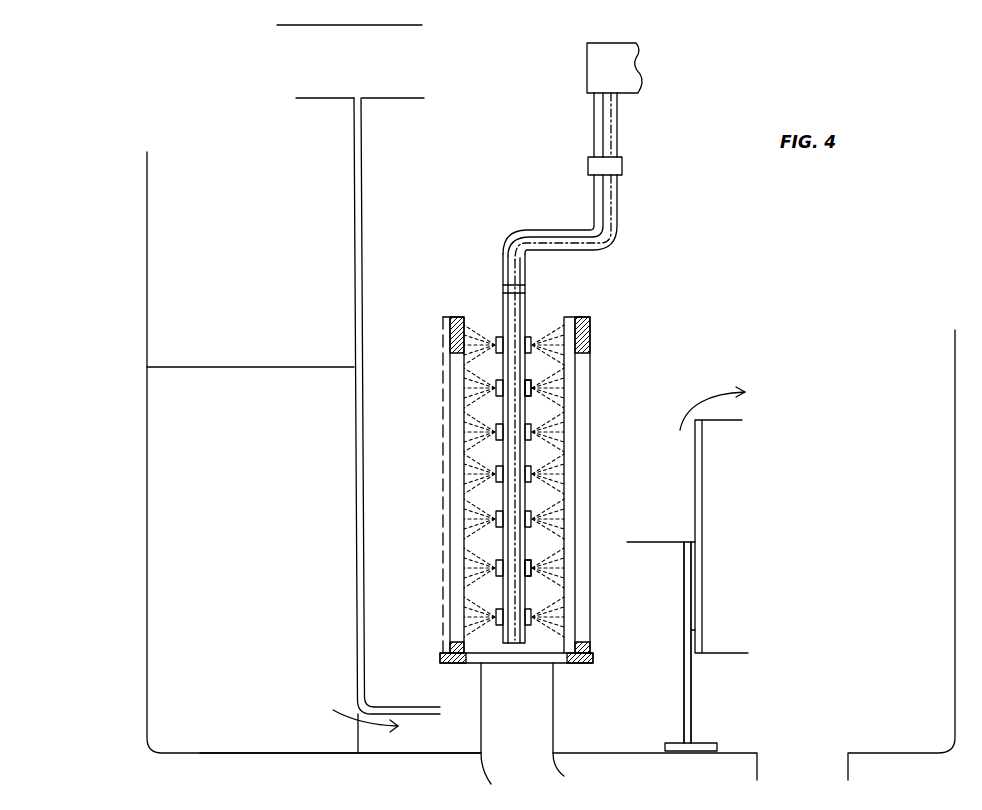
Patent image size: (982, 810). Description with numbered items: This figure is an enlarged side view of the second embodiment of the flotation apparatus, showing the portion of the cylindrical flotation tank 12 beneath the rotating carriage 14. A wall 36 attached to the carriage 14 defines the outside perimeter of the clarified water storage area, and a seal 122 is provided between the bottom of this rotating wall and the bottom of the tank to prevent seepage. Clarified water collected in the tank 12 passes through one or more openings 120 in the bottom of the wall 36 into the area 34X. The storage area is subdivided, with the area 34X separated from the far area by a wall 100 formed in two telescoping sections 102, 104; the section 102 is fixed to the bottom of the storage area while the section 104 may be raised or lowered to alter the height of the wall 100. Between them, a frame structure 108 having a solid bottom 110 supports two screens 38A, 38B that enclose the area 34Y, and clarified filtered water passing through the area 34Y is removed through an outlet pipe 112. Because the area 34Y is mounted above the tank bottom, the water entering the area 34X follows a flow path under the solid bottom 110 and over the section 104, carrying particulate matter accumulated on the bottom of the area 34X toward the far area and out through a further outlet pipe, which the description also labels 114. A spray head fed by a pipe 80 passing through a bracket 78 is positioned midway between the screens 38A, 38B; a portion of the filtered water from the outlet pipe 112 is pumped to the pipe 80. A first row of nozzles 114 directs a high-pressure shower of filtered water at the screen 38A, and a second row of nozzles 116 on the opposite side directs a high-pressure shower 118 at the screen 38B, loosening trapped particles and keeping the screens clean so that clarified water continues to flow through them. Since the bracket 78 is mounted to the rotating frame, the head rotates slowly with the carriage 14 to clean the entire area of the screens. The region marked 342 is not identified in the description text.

The flotation tank 12 is at (190, 283).
The carriage 14 is at (366, 60).
The wall 36 is at (353, 163).
The area 34X is at (396, 273).
The area 34Y is at (537, 313).
The bracket 78 is at (614, 77).
The pipe 80 is at (617, 135).
The outlet pipe 112 is at (505, 302).
The outlet pipe 114 is at (495, 340).
The second row of nozzles 116 is at (531, 392).
The high-pressure shower 118 is at (533, 569).
The frame structure 108 is at (585, 373).
The screen 38A is at (443, 513).
The screen 38B is at (577, 468).
The solid bottom 110 is at (557, 665).
The wall 100 is at (707, 580).
The telescoping section 102 is at (693, 692).
The telescoping section 104 is at (702, 514).
The chamber 342 is at (849, 473).
The openings 120 is at (355, 733).
The seal 122 is at (333, 755).